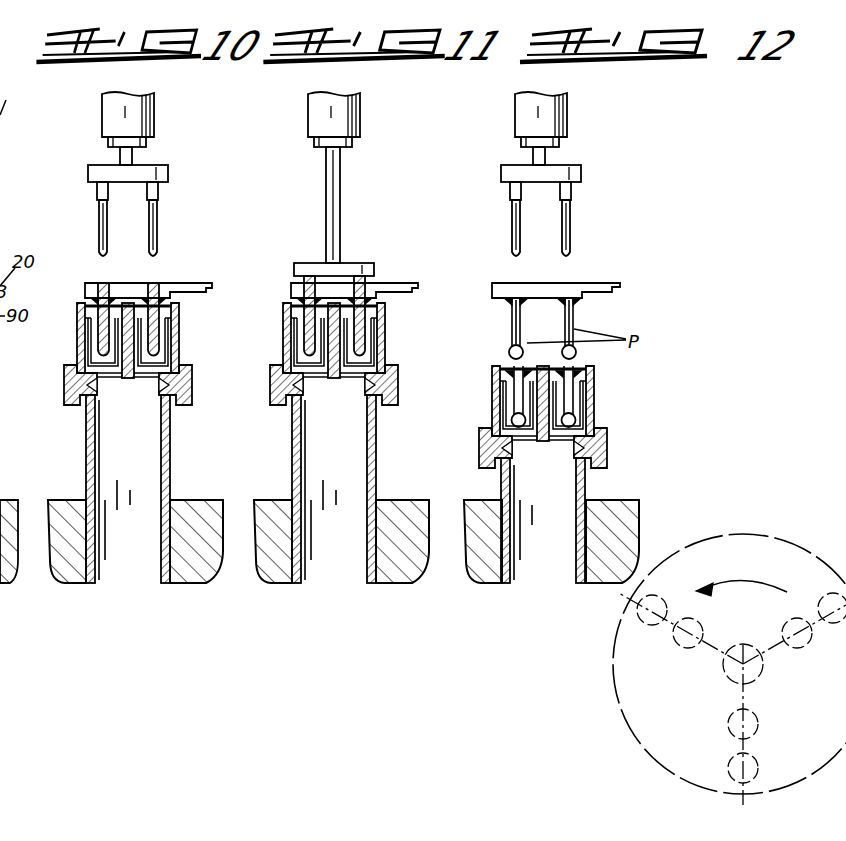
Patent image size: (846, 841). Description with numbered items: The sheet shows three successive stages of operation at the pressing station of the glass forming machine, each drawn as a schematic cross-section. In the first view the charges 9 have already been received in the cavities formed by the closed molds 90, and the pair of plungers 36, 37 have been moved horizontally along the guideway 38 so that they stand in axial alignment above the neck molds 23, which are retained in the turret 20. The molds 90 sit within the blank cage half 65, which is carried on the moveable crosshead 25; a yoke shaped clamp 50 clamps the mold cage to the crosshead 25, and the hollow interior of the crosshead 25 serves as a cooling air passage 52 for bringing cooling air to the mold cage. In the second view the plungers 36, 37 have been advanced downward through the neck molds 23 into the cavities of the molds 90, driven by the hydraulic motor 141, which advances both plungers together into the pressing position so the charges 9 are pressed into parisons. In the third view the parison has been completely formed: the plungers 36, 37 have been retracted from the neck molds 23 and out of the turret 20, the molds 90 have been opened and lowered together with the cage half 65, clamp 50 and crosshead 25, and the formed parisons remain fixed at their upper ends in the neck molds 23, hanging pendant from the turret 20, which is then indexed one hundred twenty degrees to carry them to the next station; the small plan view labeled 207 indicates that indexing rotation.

In FIG. 10, the hydraulic motor 141 is at (140, 112).
In FIG. 11, the hydraulic motor 141 is at (360, 177).
In FIG. 12, the hydraulic motor 141 is at (572, 128).
In FIG. 10, the guideway 38 is at (152, 176).
In FIG. 11, the guideway 38 is at (341, 251).
In FIG. 12, the guideway 38 is at (564, 165).
In FIG. 10, the plunger 36 is at (98, 212).
In FIG. 11, the plunger 36 is at (277, 316).
In FIG. 12, the plunger 36 is at (493, 219).
In FIG. 10, the plunger 37 is at (158, 214).
In FIG. 11, the plunger 37 is at (391, 316).
In FIG. 12, the plunger 37 is at (590, 219).
In FIG. 10, the turret 20 is at (206, 285).
In FIG. 11, the turret 20 is at (372, 274).
In FIG. 12, the turret 20 is at (608, 284).
In FIG. 10, the neck molds 23 is at (152, 302).
In FIG. 11, the neck molds 23 is at (331, 276).
In FIG. 12, the neck molds 23 is at (580, 301).
In FIG. 10, the blank cage half 65 is at (77, 340).
In FIG. 11, the blank cage half 65 is at (358, 340).
In FIG. 12, the blank cage half 65 is at (569, 403).
In FIG. 10, the molds 90 is at (179, 318).
In FIG. 11, the molds 90 is at (334, 342).
In FIG. 12, the molds 90 is at (539, 395).
In FIG. 10, the charges 9 is at (112, 348).
In FIG. 10, the yoke shaped clamp 50 is at (70, 383).
In FIG. 11, the yoke shaped clamp 50 is at (313, 385).
In FIG. 12, the yoke shaped clamp 50 is at (523, 448).
In FIG. 10, the crosshead 25 is at (90, 450).
In FIG. 11, the crosshead 25 is at (310, 489).
In FIG. 12, the crosshead 25 is at (586, 488).
In FIG. 10, the cooling air passage 52 is at (146, 461).
In FIG. 11, the cooling air passage 52 is at (328, 490).
In FIG. 12, the cooling air passage 52 is at (563, 500).
In FIG. 12, the rotary disc 207 is at (796, 550).